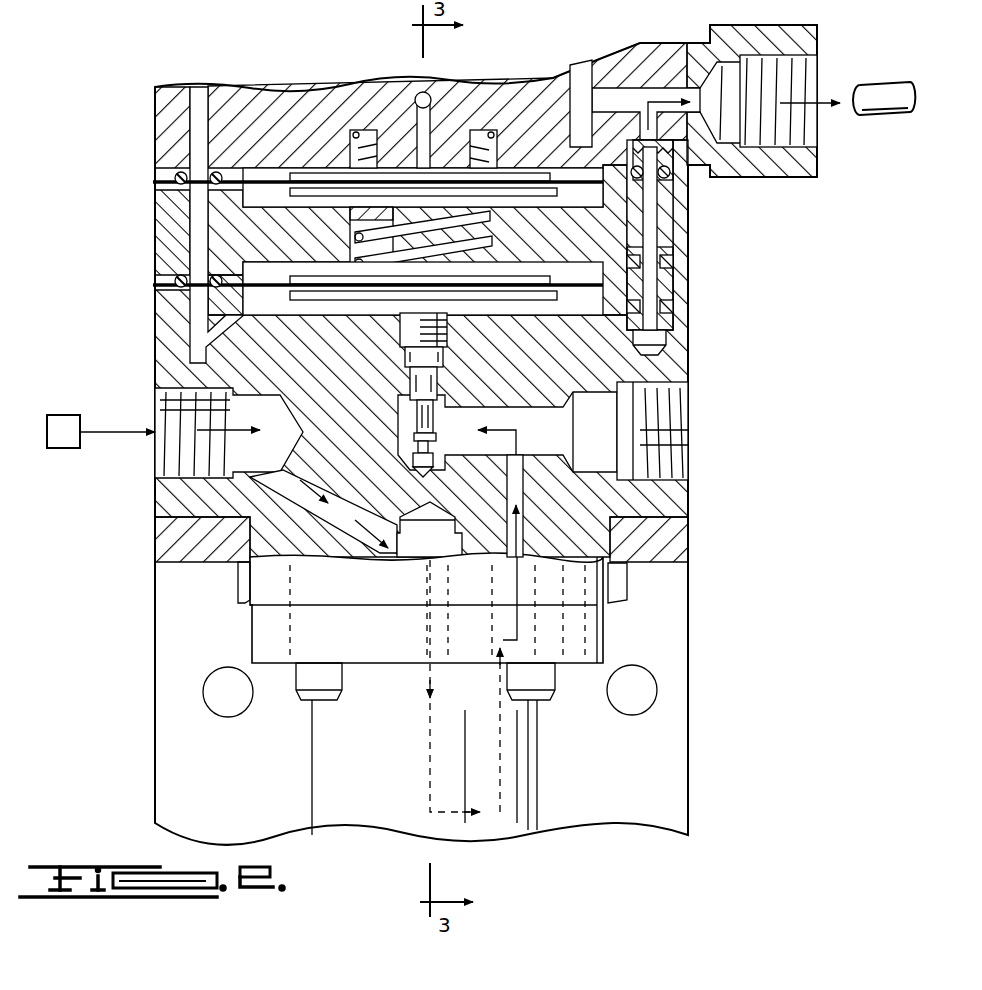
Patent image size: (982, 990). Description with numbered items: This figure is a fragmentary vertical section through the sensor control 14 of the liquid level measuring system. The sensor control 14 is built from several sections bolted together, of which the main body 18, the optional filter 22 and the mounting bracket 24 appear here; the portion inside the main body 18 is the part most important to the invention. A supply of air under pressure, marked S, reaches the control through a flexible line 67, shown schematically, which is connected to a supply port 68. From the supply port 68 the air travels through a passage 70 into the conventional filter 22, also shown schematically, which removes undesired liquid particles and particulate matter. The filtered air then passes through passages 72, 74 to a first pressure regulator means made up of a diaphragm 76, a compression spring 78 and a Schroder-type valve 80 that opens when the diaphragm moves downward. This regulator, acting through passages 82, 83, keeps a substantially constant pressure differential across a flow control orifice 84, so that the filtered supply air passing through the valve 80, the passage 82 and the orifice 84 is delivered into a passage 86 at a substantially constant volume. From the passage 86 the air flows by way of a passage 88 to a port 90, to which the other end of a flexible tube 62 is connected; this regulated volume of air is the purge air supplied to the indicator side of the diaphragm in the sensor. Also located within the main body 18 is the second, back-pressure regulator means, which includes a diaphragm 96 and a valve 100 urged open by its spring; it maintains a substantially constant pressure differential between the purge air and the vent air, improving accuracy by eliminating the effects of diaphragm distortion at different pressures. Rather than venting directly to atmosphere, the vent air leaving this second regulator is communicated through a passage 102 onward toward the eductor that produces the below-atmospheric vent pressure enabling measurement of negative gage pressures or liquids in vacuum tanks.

The sensor control 14 is at (725, 372).
The main body 18 is at (683, 233).
The filter 22 is at (482, 818).
The mounting bracket 24 is at (670, 777).
The flexible tube 62 is at (873, 85).
The flexible line 67 is at (110, 430).
The supply port 68 is at (153, 468).
The passage 70 is at (353, 520).
The passage 72 is at (513, 507).
The passage 74 is at (498, 407).
The diaphragm 76 is at (355, 290).
The compression spring 78 is at (483, 240).
The Schroder-type valve 80 is at (440, 377).
The passage 82 is at (613, 327).
The passage 83 is at (640, 215).
The flow control orifice 84 is at (650, 298).
The passage 86 is at (653, 202).
The passage 88 is at (603, 93).
The port 90 is at (797, 143).
The diaphragm 96 is at (328, 185).
The valve 100 is at (437, 160).
The passage 102 is at (430, 95).